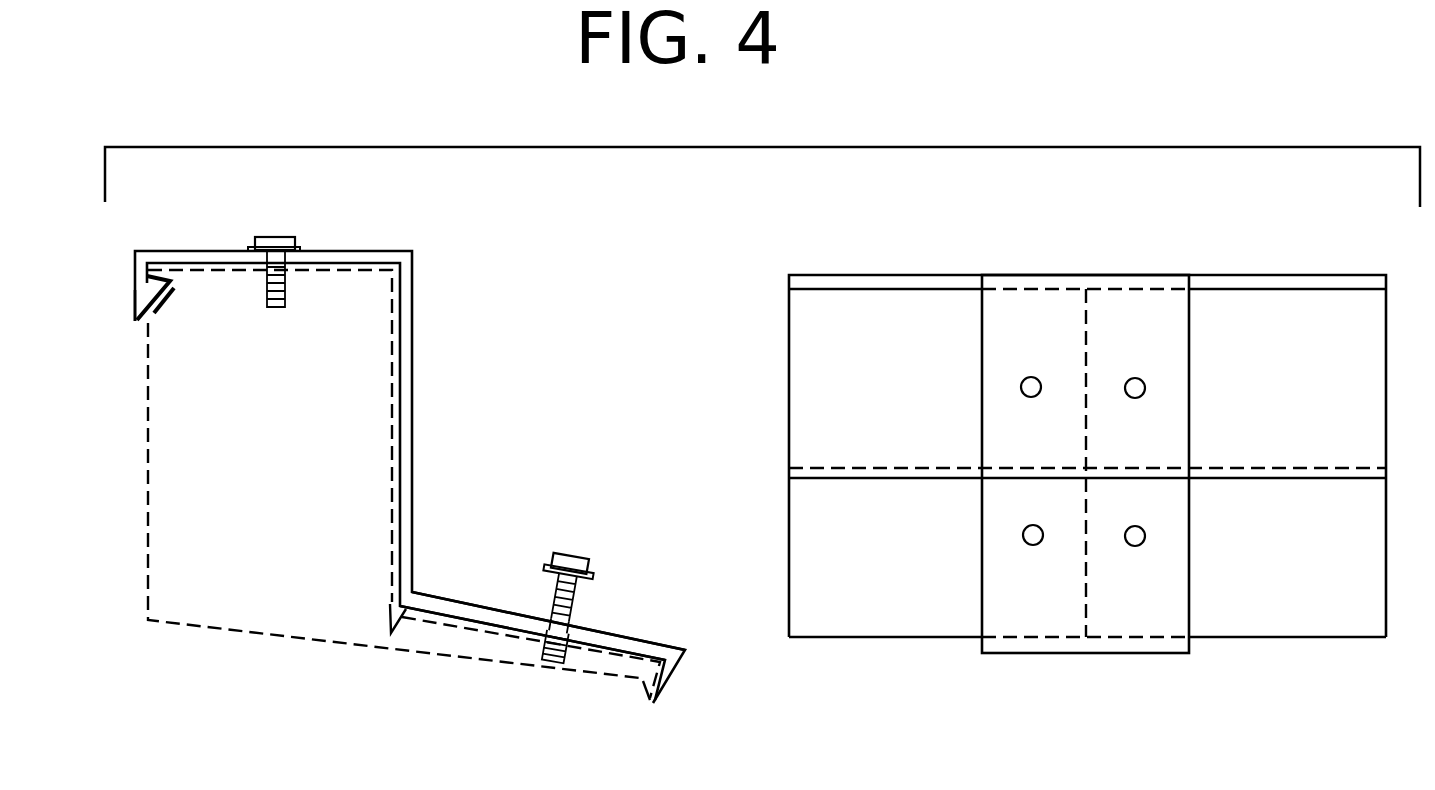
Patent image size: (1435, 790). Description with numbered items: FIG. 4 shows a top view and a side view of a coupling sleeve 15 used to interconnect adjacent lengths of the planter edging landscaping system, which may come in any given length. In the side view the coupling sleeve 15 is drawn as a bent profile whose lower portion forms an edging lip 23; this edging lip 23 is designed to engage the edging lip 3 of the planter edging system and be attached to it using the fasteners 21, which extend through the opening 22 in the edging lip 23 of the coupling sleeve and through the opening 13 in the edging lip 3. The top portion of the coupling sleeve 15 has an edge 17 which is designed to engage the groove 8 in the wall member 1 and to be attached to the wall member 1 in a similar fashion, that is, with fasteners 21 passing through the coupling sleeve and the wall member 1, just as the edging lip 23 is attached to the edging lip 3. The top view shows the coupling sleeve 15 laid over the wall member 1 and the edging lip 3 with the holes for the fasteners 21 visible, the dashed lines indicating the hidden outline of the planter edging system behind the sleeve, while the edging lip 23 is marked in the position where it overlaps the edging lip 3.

The wall member 1 is at (1392, 318).
The edging lip 3 is at (1387, 608).
The groove 8 is at (163, 297).
The opening 13 is at (290, 293).
The coupling sleeve 15 is at (375, 250).
The edge 17 is at (132, 292).
The fasteners 21 is at (273, 240).
The opening 22 is at (557, 622).
The edging lip 23 is at (610, 632).